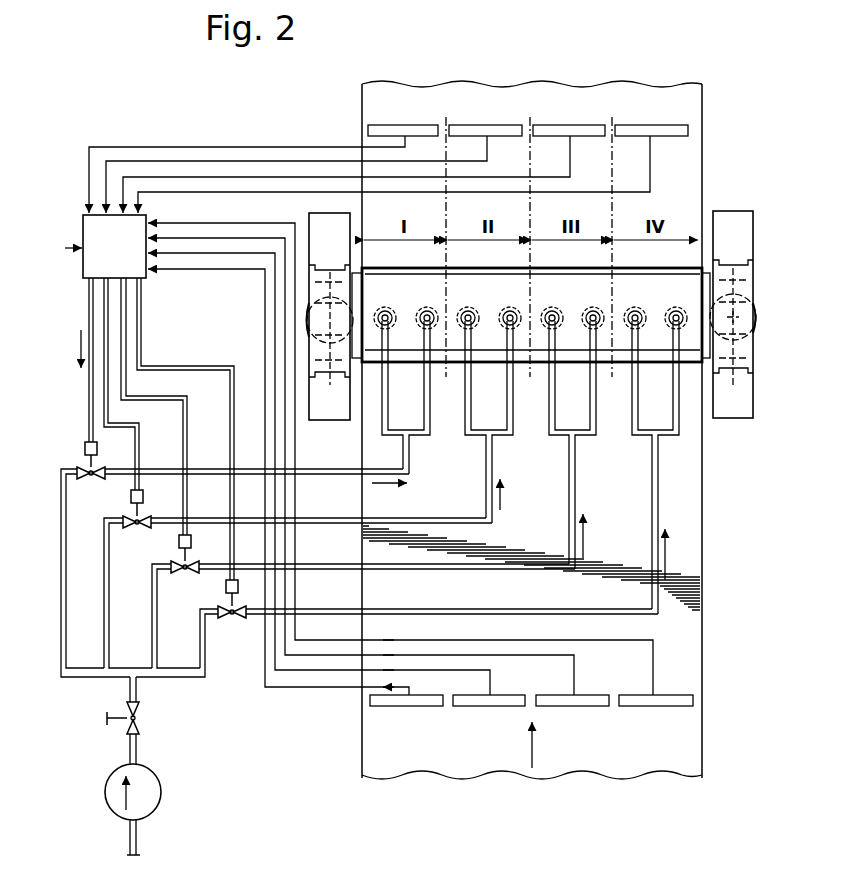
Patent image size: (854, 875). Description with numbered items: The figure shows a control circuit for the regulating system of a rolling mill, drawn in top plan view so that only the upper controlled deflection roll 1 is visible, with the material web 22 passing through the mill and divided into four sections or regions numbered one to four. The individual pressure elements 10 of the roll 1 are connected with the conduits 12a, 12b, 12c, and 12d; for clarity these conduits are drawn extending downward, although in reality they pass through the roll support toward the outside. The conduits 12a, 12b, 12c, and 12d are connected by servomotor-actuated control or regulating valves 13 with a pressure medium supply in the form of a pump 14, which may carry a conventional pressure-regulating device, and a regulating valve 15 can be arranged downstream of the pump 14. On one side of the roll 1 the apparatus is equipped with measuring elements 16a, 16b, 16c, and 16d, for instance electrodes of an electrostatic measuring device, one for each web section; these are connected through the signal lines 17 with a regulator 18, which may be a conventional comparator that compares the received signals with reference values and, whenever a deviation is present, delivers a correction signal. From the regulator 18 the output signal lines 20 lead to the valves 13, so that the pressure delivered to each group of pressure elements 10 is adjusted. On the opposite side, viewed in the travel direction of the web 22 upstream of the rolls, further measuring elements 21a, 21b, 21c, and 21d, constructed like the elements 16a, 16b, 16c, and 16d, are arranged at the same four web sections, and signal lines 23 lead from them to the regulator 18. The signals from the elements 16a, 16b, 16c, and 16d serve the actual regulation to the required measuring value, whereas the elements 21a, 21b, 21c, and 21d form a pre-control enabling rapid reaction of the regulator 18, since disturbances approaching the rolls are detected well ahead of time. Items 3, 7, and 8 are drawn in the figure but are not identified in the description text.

The controlled deflection roll 1 is at (687, 378).
The rollers 3 is at (306, 222).
The roller axis 7 is at (732, 325).
The nozzle bar 8 is at (495, 366).
The pressure elements 10 is at (428, 307).
The conduit 12a is at (422, 437).
The conduit 12b is at (506, 437).
The conduit 12c is at (589, 437).
The conduit 12d is at (672, 437).
The control valves 13 is at (231, 636).
The pump 14 is at (147, 772).
The regulating valve 15 is at (139, 730).
The measuring element 16a is at (390, 127).
The measuring element 16b is at (488, 127).
The measuring element 16c is at (584, 127).
The measuring element 16d is at (657, 127).
The signal lines 17 is at (127, 148).
The regulator 18 is at (84, 220).
The output signal lines 20 is at (145, 320).
The measuring element 21a is at (400, 706).
The measuring element 21b is at (483, 706).
The measuring element 21c is at (585, 706).
The measuring element 21d is at (670, 706).
The material web 22 is at (702, 569).
The signal lines 23 is at (297, 453).